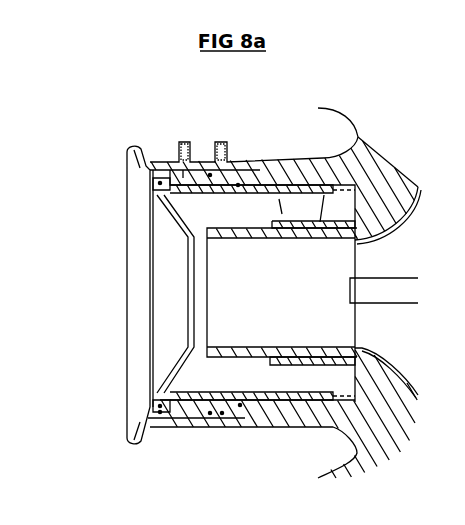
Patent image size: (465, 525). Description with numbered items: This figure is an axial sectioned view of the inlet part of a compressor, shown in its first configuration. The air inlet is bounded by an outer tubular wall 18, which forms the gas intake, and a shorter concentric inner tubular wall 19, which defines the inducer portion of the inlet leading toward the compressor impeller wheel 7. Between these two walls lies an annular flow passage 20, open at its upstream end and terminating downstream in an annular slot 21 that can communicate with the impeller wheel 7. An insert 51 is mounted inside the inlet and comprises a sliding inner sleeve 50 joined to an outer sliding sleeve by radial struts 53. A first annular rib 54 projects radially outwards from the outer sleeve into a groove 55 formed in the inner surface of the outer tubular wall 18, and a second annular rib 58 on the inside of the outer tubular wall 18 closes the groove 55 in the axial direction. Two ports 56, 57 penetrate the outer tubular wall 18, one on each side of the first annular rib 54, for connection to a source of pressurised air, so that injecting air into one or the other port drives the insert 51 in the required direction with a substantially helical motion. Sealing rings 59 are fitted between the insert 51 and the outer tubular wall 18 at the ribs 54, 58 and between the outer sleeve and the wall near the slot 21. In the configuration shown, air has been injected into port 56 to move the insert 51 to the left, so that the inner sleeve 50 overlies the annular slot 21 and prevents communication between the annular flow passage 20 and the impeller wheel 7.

The compressor impeller wheel 7 is at (388, 318).
The outer tubular wall 18 is at (127, 154).
The inner tubular wall 19 is at (247, 237).
The annular flow passage 20 is at (205, 214).
The annular slot 21 is at (367, 237).
The inner sleeve 50 is at (160, 183).
The insert 51 is at (138, 210).
The radial struts 53 is at (285, 204).
The first annular rib 54 is at (238, 185).
The groove 55 is at (183, 170).
The port 56 is at (185, 143).
The port 57 is at (210, 175).
The second annular rib 58 is at (161, 410).
The sealing rings 59 is at (160, 406).